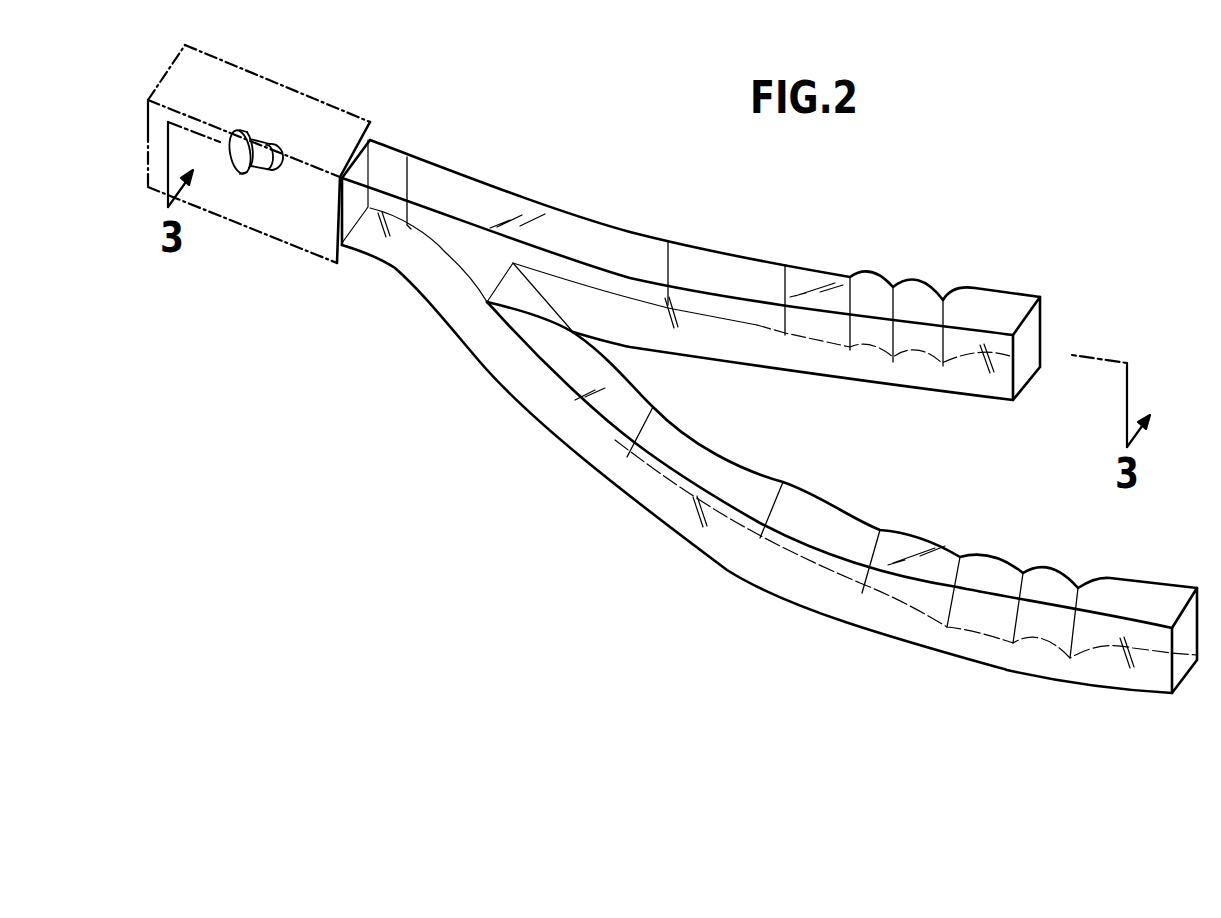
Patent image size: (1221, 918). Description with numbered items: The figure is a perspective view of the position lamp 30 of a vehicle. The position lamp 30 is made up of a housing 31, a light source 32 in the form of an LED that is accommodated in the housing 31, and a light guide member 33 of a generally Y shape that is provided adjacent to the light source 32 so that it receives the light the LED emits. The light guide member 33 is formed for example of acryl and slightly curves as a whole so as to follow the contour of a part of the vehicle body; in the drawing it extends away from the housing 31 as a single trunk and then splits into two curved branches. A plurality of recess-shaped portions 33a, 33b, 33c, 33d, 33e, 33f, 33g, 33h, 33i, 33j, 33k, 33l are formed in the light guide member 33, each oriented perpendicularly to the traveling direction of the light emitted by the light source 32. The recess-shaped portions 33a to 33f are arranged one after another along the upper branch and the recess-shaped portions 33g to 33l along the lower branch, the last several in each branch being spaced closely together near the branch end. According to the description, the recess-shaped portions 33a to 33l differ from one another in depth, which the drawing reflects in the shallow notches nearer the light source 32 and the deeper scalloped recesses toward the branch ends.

The position lamp 30 is at (192, 327).
The housing 31 is at (289, 243).
The light source 32 is at (234, 173).
The light guide member 33 is at (380, 260).
The recess-shaped portion 33a is at (407, 157).
The recess-shaped portion 33b is at (668, 242).
The recess-shaped portion 33c is at (785, 265).
The recess-shaped portion 33d is at (850, 277).
The recess-shaped portion 33e is at (893, 290).
The recess-shaped portion 33f is at (943, 300).
The recess-shaped portion 33g is at (653, 407).
The recess-shaped portion 33h is at (783, 482).
The recess-shaped portion 33i is at (880, 530).
The recess-shaped portion 33j is at (960, 557).
The recess-shaped portion 33k is at (1023, 573).
The recess-shaped portion 33l is at (1078, 588).